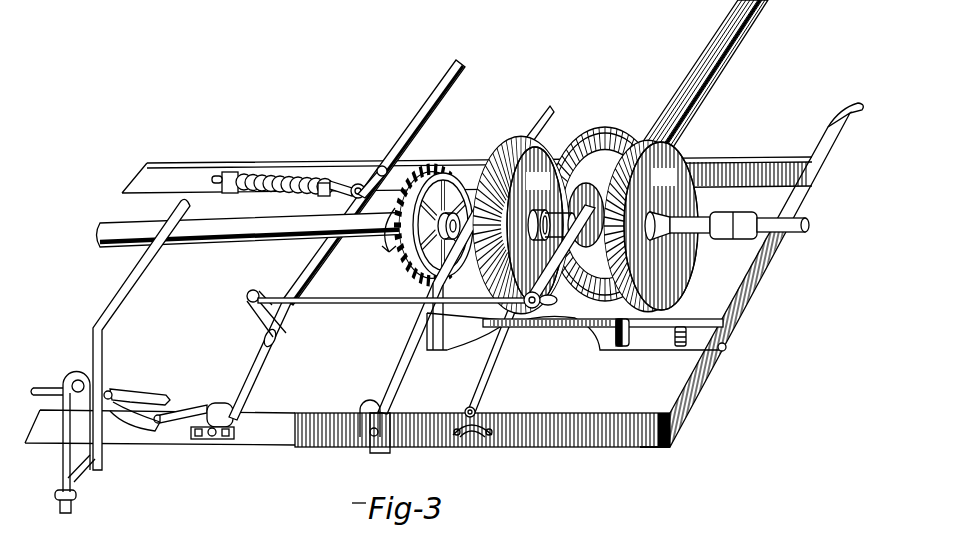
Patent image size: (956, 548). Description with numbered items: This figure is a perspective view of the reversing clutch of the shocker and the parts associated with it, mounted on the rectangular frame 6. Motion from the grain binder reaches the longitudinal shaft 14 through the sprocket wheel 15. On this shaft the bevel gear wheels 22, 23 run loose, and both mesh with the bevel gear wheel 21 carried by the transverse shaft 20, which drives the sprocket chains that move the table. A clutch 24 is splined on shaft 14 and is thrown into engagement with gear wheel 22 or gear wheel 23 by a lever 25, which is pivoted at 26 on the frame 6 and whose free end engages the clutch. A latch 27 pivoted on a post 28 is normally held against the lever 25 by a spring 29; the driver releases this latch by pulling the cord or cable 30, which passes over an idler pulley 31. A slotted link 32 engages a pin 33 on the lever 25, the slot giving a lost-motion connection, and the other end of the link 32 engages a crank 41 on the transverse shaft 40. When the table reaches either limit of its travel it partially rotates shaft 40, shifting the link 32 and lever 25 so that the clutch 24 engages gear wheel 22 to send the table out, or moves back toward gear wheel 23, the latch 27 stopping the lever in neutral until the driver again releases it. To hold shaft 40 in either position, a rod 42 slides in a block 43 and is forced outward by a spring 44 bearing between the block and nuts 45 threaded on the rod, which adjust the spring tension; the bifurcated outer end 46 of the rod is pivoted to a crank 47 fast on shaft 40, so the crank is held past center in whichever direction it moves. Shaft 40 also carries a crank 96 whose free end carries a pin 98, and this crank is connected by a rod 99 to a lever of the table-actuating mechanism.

The rectangular frame 6 is at (562, 442).
The longitudinal shaft 14 is at (289, 237).
The sprocket wheel 15 is at (399, 259).
The transverse shaft 20 is at (680, 99).
The bevel gear wheel 21 is at (605, 203).
The bevel gear wheel 22 is at (706, 226).
The bevel gear wheel 23 is at (524, 225).
The clutch 24 is at (584, 262).
The lever 25 is at (507, 363).
The pivot 26 is at (468, 407).
The latch 27 is at (600, 328).
The post 28 is at (624, 348).
The spring 29 is at (680, 348).
The cord or cable 30 is at (648, 486).
The idler pulley 31 is at (727, 348).
The slotted link 32 is at (388, 305).
The pin 33 is at (558, 301).
The transverse shaft 40 is at (323, 272).
The crank 41 is at (261, 317).
The rod 42 is at (291, 174).
The block 43 is at (236, 172).
The spring 44 is at (336, 178).
The nuts 45 is at (320, 196).
The bifurcated outer end 46 is at (352, 198).
The crank 47 is at (388, 173).
The crank 96 is at (189, 411).
The pin 98 is at (110, 416).
The rod 99 is at (153, 397).